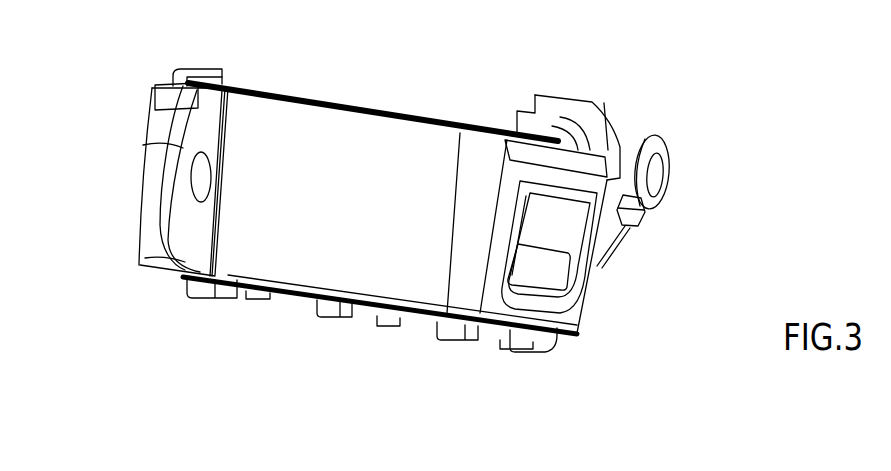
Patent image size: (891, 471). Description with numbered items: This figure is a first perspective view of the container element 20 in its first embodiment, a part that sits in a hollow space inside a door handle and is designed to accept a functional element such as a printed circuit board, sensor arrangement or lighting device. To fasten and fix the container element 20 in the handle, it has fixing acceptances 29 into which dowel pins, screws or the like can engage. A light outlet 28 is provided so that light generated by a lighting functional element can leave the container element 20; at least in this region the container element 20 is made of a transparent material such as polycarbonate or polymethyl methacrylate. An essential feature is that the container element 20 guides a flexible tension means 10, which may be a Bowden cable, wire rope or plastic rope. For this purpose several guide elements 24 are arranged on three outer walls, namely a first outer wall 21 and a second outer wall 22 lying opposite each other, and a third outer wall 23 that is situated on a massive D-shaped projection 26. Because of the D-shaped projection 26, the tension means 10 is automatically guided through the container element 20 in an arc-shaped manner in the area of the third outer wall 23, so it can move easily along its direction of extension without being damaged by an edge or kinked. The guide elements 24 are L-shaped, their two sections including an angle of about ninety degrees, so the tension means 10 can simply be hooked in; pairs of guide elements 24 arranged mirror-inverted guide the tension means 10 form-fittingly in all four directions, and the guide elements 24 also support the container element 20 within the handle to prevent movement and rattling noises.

The tension means 10 is at (173, 88).
The container element 20 is at (412, 160).
The first outer wall 21 is at (305, 318).
The second outer wall 22 is at (378, 108).
The third outer wall 23 is at (147, 170).
The guide elements 24 is at (203, 72).
The D-shaped projection 26 is at (212, 122).
The light outlet 28 is at (540, 248).
The fixing acceptances 29 is at (203, 177).